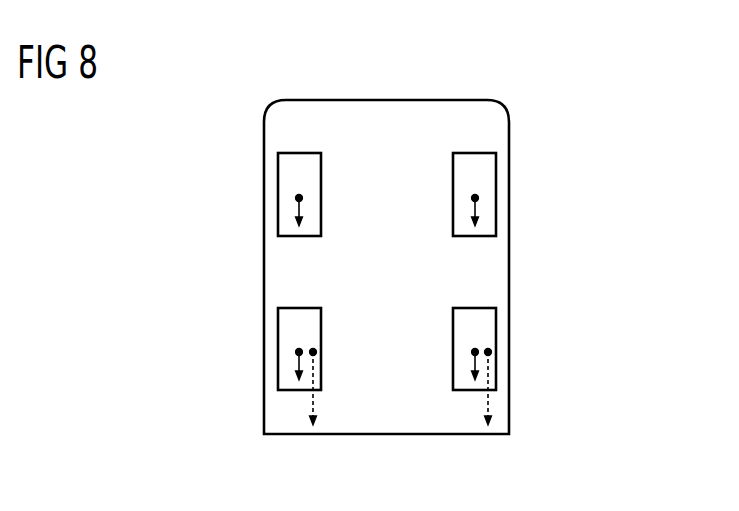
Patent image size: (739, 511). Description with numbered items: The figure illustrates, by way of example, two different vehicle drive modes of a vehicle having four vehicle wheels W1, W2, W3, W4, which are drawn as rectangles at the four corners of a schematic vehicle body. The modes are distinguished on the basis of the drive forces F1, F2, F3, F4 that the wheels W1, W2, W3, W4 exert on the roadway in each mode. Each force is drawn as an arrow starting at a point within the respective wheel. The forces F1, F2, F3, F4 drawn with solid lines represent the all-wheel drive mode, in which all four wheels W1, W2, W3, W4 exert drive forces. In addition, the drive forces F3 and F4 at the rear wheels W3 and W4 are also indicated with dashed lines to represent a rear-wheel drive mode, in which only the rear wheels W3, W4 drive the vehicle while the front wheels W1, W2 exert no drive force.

The vehicle wheel W1 is at (278, 176).
The vehicle wheel W2 is at (496, 174).
The vehicle wheel W3 is at (278, 329).
The vehicle wheel W4 is at (496, 328).
The drive force F1 is at (323, 214).
The drive force F2 is at (450, 214).
The drive force F3 is at (325, 387).
The drive force F4 is at (456, 387).